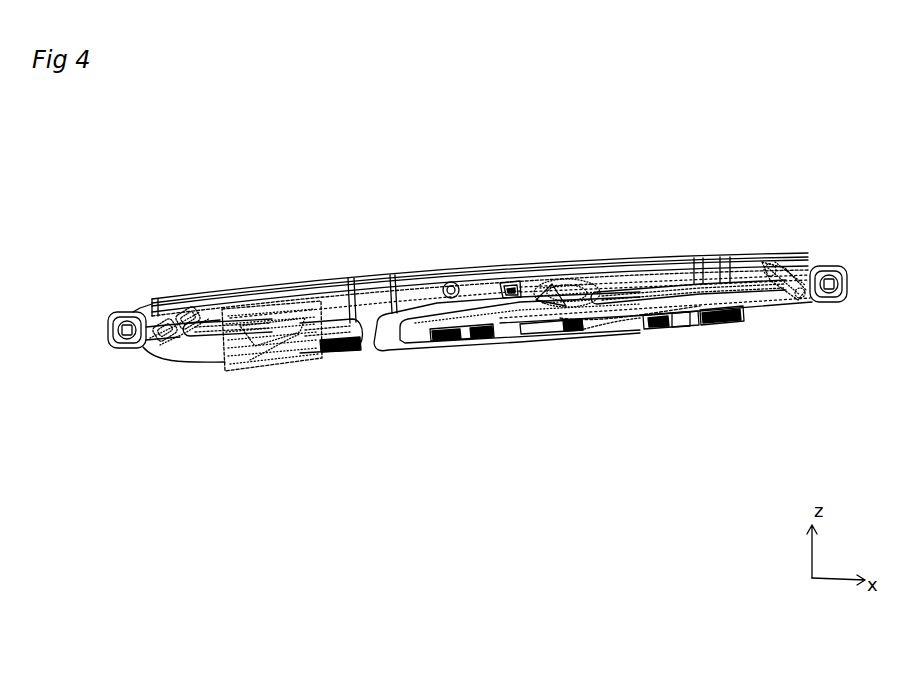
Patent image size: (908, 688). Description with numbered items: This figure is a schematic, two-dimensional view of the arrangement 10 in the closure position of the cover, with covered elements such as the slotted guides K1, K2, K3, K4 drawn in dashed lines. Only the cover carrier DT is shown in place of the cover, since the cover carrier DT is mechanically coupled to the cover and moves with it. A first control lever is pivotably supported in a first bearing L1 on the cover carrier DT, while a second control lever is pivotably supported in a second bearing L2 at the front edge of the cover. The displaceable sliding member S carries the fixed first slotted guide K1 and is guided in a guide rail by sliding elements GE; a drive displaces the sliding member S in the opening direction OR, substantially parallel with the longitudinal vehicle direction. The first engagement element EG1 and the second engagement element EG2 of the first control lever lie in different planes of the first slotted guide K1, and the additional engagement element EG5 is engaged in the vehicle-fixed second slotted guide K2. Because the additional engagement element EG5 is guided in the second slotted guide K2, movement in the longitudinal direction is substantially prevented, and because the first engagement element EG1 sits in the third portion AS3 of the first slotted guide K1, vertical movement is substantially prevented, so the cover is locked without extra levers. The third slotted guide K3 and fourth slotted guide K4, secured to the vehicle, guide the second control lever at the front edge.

The device 10 is at (842, 71).
The cover carrier DT is at (413, 280).
The first bearing L1 is at (830, 302).
The second bearing L2 is at (123, 349).
The first slotted guide K1 is at (632, 320).
The second slotted guide K2 is at (540, 316).
The third slotted guide K3 is at (272, 368).
The fourth slotted guide K4 is at (349, 355).
The sliding member S is at (414, 348).
The sliding elements GE is at (455, 344).
The first engagement element EG1 is at (656, 330).
The second engagement element EG2 is at (547, 310).
The additional engagement element EG5 is at (519, 292).
The third portion AS3 is at (684, 337).
The opening direction OR is at (468, 414).